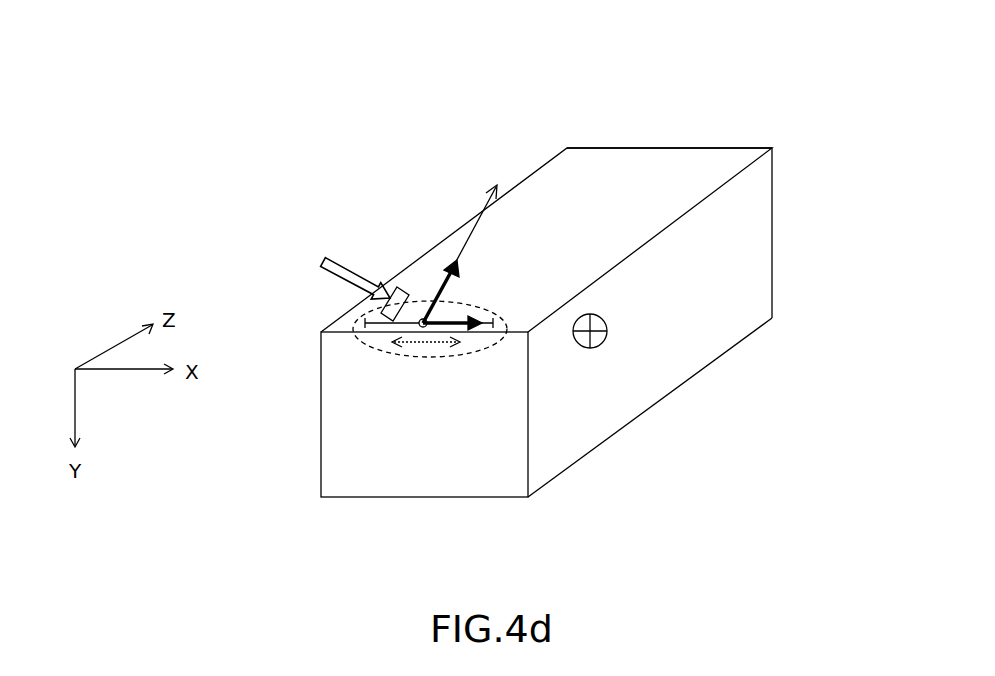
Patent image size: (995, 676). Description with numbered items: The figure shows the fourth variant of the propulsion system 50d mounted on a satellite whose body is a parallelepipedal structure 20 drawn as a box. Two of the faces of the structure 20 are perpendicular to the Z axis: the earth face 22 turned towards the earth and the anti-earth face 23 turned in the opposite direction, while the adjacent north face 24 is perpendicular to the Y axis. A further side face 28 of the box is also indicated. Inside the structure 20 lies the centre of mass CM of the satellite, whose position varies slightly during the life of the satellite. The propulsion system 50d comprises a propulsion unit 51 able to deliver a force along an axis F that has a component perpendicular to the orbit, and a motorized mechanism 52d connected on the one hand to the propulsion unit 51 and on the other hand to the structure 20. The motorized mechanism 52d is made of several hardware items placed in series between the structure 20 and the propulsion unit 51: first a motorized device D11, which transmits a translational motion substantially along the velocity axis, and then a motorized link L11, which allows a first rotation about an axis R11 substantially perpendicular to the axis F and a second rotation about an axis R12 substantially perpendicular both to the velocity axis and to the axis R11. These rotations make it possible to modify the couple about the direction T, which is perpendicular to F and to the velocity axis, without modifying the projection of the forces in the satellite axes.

The parallelepipedal structure 20 is at (730, 183).
The earth face 22 is at (665, 148).
The anti-earth face 23 is at (481, 487).
The north face 24 is at (593, 164).
The side surface 28 is at (750, 258).
The centre of mass CM is at (600, 340).
The propulsion system 50d is at (360, 170).
The force axis F is at (325, 256).
The propulsion unit 51 is at (405, 278).
The motorized link L11 is at (425, 303).
The direction T is at (462, 235).
The first rotation axis R11 is at (460, 282).
The second rotation axis R12 is at (463, 308).
The motorized mechanism 52d is at (385, 345).
The motorized device D11 is at (433, 345).